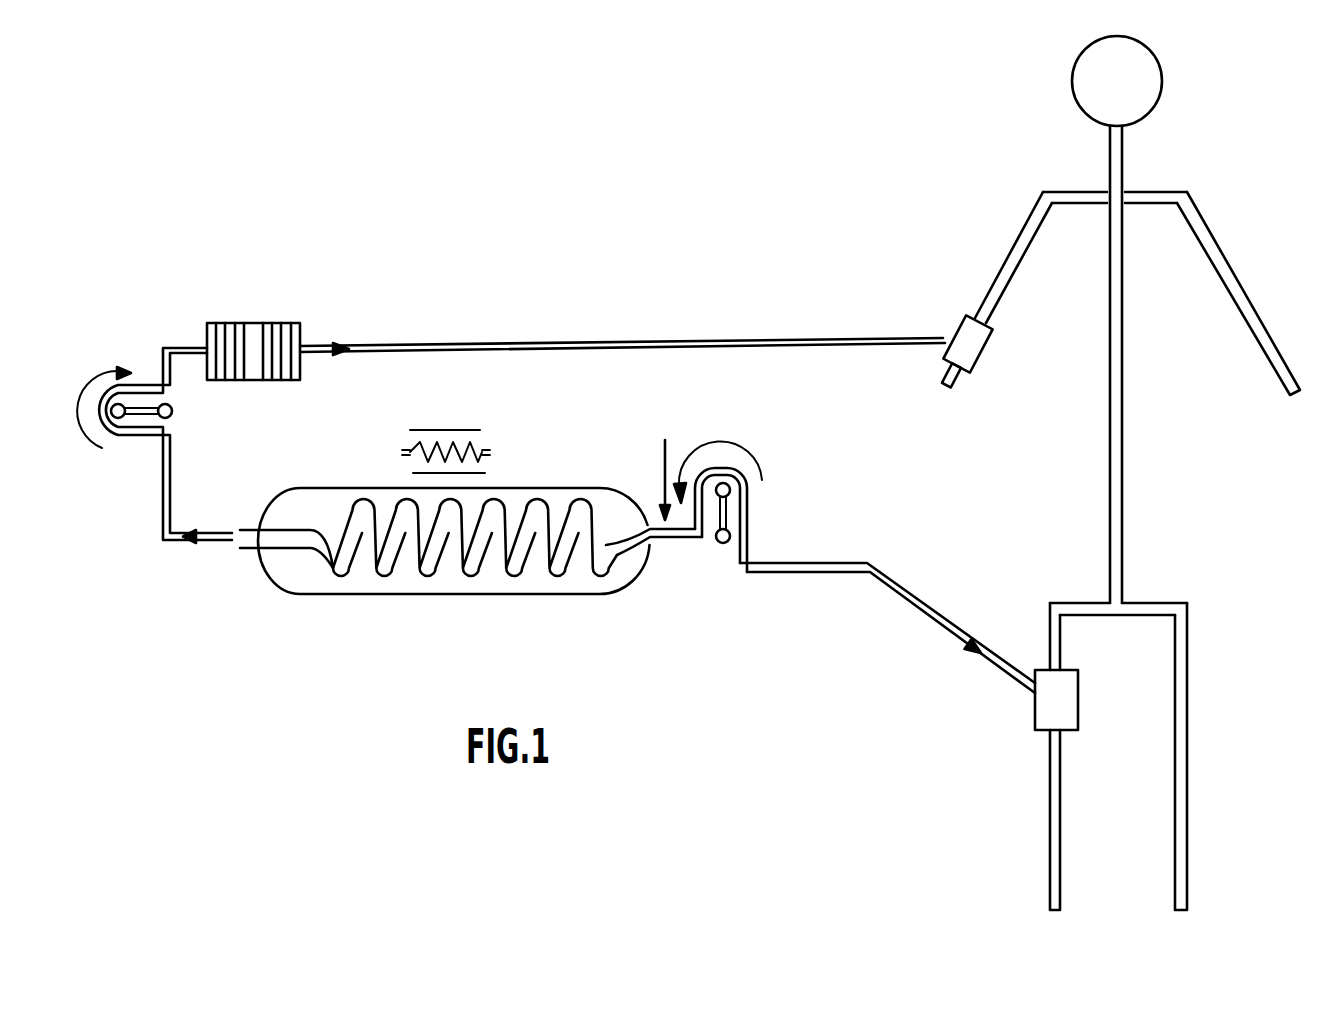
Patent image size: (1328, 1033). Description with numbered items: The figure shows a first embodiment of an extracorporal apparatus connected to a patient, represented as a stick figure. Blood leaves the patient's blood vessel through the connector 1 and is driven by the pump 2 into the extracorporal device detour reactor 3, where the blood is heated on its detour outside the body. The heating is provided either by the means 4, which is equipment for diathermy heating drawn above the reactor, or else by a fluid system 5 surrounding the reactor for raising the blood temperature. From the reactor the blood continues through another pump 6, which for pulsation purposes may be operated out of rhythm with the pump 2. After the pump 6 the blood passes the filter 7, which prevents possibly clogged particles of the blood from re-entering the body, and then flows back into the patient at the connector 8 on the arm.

The connector 1 is at (1047, 668).
The pump 2 is at (747, 507).
The extracorporal device detour reactor 3 is at (430, 577).
The means for diathermy heating 4 is at (483, 445).
The fluid system 5 is at (292, 582).
The pump 6 is at (173, 410).
The filter 7 is at (252, 376).
The connector 8 is at (975, 358).